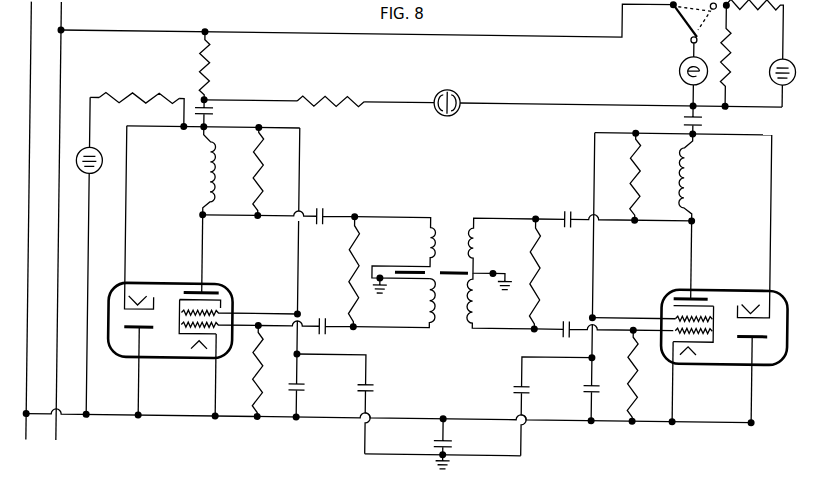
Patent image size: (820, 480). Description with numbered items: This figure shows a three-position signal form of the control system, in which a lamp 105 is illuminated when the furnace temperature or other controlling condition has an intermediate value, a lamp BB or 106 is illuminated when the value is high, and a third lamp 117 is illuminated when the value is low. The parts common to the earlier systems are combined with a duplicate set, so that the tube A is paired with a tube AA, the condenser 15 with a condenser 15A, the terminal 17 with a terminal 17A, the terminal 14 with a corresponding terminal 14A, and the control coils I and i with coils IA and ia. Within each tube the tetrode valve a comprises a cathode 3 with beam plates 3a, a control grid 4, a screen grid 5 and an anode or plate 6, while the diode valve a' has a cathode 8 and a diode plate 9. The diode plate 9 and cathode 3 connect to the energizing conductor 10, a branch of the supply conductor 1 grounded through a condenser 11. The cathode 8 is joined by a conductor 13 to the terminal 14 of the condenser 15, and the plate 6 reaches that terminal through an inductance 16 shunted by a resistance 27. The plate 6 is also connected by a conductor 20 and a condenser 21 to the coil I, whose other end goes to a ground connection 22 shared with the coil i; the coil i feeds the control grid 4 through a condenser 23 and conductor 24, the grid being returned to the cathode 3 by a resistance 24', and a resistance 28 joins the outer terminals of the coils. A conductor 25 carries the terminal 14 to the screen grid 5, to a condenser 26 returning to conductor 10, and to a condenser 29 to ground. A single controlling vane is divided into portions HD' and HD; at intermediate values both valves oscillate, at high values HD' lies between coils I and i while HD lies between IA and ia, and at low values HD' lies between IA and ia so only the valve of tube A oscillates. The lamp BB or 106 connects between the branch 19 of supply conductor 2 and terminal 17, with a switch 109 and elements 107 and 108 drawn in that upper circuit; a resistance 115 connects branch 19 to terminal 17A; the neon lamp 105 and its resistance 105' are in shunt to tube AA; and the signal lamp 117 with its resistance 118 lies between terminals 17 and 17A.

The supply conductor 1 is at (31, 60).
The supply conductor 2 is at (61, 59).
The conductor 19 is at (510, 30).
The energizing conductor 10 is at (277, 415).
The resistance 105' is at (139, 96).
The neon tube lamp 105 is at (99, 257).
The resistance 115 is at (211, 66).
The condenser terminal 17A is at (213, 108).
The resistance 118 is at (331, 88).
The signal lamp 117 is at (455, 90).
The switch 109 is at (680, 8).
The resistor 107 is at (746, 8).
The resistor 108 is at (732, 47).
The filament lamp BB is at (676, 67).
The neon type lamp 106 is at (768, 72).
The condenser terminal 17 is at (703, 115).
The condenser 15 is at (682, 112).
The condenser 15A is at (213, 162).
The inductance coil 14A is at (212, 130).
The condenser terminal 14 is at (696, 132).
The inductance 16 is at (203, 170).
The resistance 27 is at (266, 166).
The conductor 25 is at (303, 167).
The conductor 13 is at (128, 213).
The conductor 20 is at (224, 216).
The condenser 21 is at (324, 209).
The resistance 28 is at (353, 252).
The control coil IA is at (426, 234).
The control coil ia is at (423, 306).
The vane portion HD is at (407, 258).
The vane portion HD' is at (458, 229).
The ground connection 22 is at (388, 278).
The inductance or control coil I is at (484, 238).
The inductance or control coil i is at (483, 304).
The conductor 24 is at (439, 342).
The condenser 23 is at (327, 332).
The condenser 26 is at (308, 382).
The condenser 29 is at (378, 382).
The condenser 11 is at (436, 440).
The resistance 24' is at (440, 373).
The control grid 4 is at (226, 356).
The tube AA is at (180, 274).
The tube A is at (697, 279).
The cathode 8 is at (154, 280).
The diode plate 9 is at (127, 356).
The diode valve a' is at (440, 306).
The anode or plate 6 is at (205, 289).
The screen grid 5 is at (227, 296).
The tetrode valve a is at (446, 307).
The beam plates 3a is at (224, 297).
The cathode 3 is at (191, 354).